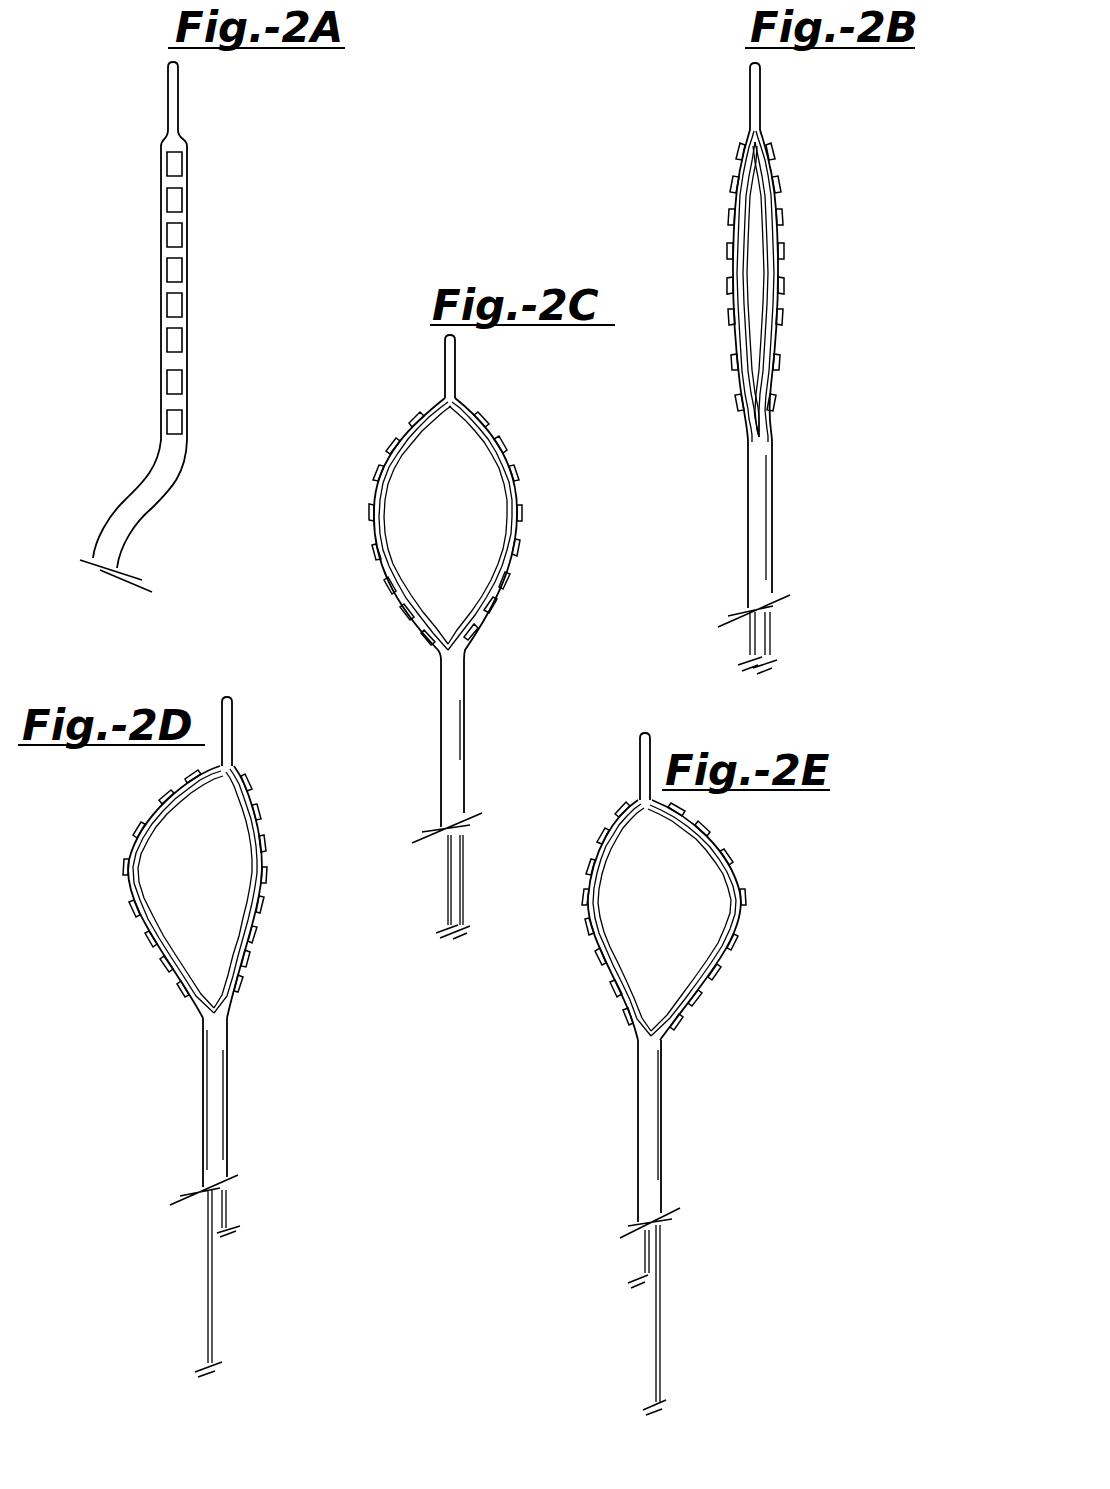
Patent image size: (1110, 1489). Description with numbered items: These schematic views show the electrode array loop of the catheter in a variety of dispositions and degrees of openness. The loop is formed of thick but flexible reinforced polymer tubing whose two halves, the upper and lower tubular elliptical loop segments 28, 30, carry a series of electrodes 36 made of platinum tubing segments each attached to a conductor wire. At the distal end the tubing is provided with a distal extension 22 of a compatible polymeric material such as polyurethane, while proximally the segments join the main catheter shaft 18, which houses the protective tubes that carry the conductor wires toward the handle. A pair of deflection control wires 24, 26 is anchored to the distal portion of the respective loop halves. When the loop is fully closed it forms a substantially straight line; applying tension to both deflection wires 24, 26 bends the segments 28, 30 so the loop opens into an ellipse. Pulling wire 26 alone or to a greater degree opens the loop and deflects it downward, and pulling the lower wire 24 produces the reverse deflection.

In FIG. 2A, the main catheter shaft 18 is at (155, 505).
In FIG. 2B, the main catheter shaft 18 is at (773, 545).
In FIG. 2C, the main catheter shaft 18 is at (467, 740).
In FIG. 2D, the main catheter shaft 18 is at (228, 1112).
In FIG. 2E, the main catheter shaft 18 is at (662, 1107).
In FIG. 2A, the distal extension 22 is at (178, 90).
In FIG. 2B, the distal extension 22 is at (760, 98).
In FIG. 2C, the distal extension 22 is at (455, 358).
In FIG. 2D, the distal extension 22 is at (232, 730).
In FIG. 2E, the distal extension 22 is at (637, 757).
In FIG. 2B, the deflection control wire 24 is at (753, 273).
In FIG. 2C, the deflection control wire 24 is at (487, 465).
In FIG. 2D, the deflection control wire 24 is at (228, 1212).
In FIG. 2E, the deflection control wire 24 is at (662, 1330).
In FIG. 2B, the deflection control wire 26 is at (752, 307).
In FIG. 2C, the deflection control wire 26 is at (390, 545).
In FIG. 2D, the deflection control wire 26 is at (208, 1268).
In FIG. 2E, the deflection control wire 26 is at (643, 1240).
In FIG. 2A, the tubular elliptical loop segment 28 is at (188, 216).
In FIG. 2B, the tubular elliptical loop segment 28 is at (780, 233).
In FIG. 2C, the tubular elliptical loop segment 28 is at (505, 465).
In FIG. 2D, the tubular elliptical loop segment 28 is at (268, 826).
In FIG. 2E, the tubular elliptical loop segment 28 is at (738, 922).
In FIG. 2B, the tubular elliptical loop segment 30 is at (727, 268).
In FIG. 2C, the tubular elliptical loop segment 30 is at (372, 498).
In FIG. 2D, the tubular elliptical loop segment 30 is at (128, 887).
In FIG. 2E, the tubular elliptical loop segment 30 is at (605, 977).
In FIG. 2A, the electrodes 36 is at (183, 342).
In FIG. 2B, the electrodes 36 is at (737, 366).
In FIG. 2C, the electrodes 36 is at (508, 592).
In FIG. 2D, the electrodes 36 is at (255, 930).
In FIG. 2E, the electrodes 36 is at (727, 857).